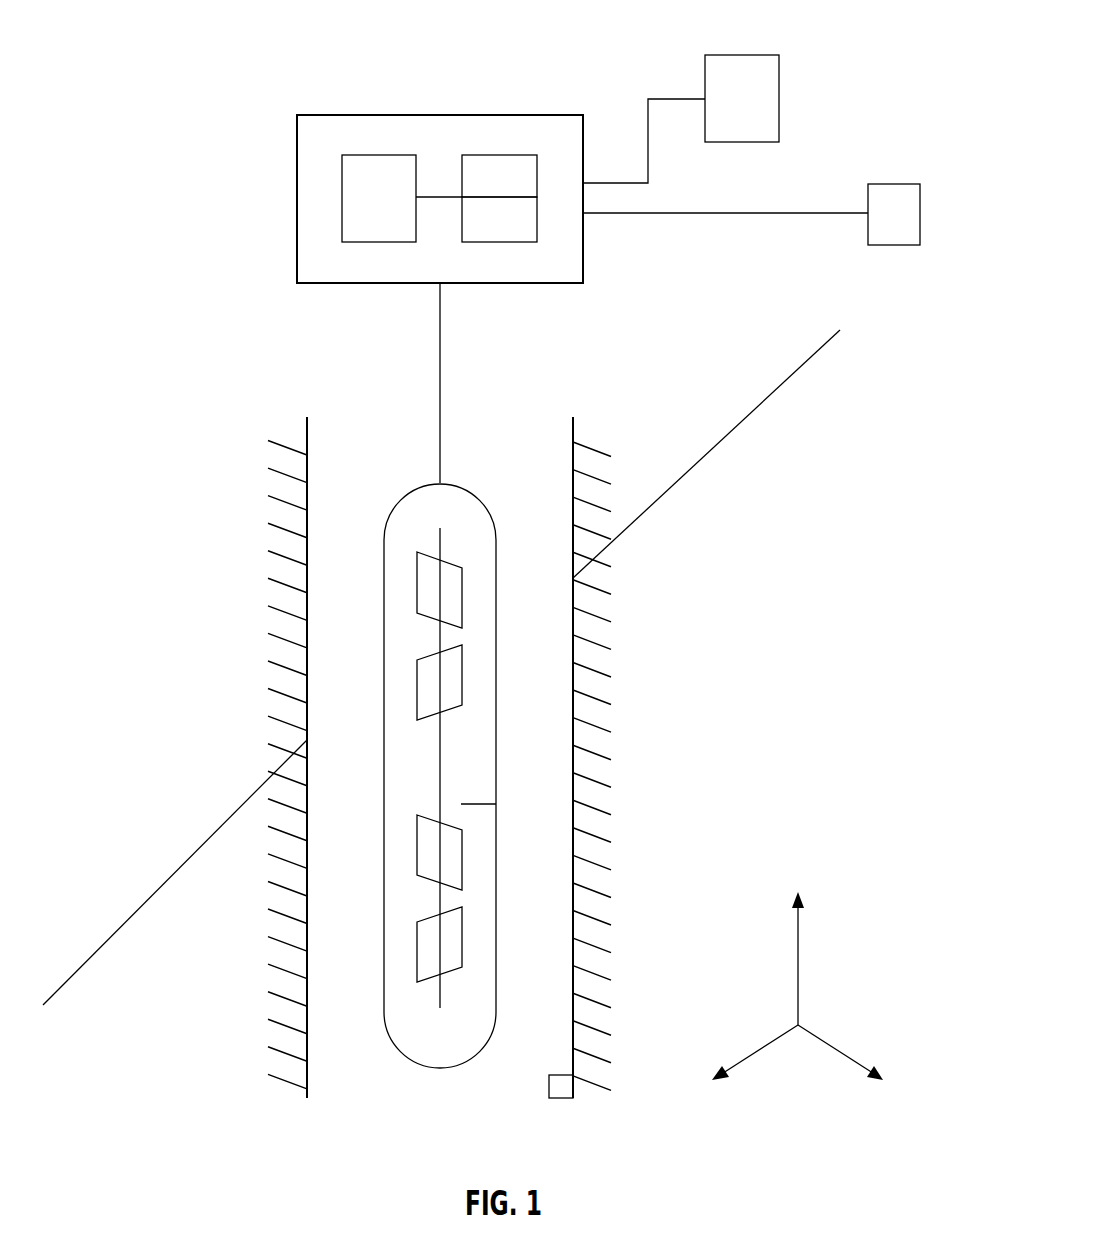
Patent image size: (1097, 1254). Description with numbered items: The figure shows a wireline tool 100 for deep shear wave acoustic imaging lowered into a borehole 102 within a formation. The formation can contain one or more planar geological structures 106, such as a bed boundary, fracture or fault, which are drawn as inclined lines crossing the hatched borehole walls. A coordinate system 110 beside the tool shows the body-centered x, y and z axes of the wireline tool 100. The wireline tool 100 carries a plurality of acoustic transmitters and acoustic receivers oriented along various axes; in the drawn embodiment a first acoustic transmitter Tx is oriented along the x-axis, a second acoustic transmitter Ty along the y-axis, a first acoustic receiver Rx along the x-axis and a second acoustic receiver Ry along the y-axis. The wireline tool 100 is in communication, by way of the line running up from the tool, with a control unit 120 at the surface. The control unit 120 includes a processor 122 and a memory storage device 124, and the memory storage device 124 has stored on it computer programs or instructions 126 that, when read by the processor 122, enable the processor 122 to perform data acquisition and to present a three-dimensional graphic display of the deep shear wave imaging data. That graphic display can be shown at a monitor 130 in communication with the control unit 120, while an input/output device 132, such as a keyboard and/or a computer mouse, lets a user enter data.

The wireline tool 100 is at (497, 393).
The borehole 102 is at (562, 825).
The planar geological structure 106 is at (192, 854).
The coordinate system 110 is at (744, 661).
The control unit 120 is at (323, 113).
The processor 122 is at (380, 155).
The memory storage device 124 is at (500, 155).
The computer programs or instructions 126 is at (500, 242).
The monitor 130 is at (745, 142).
The input/output device 132 is at (895, 184).